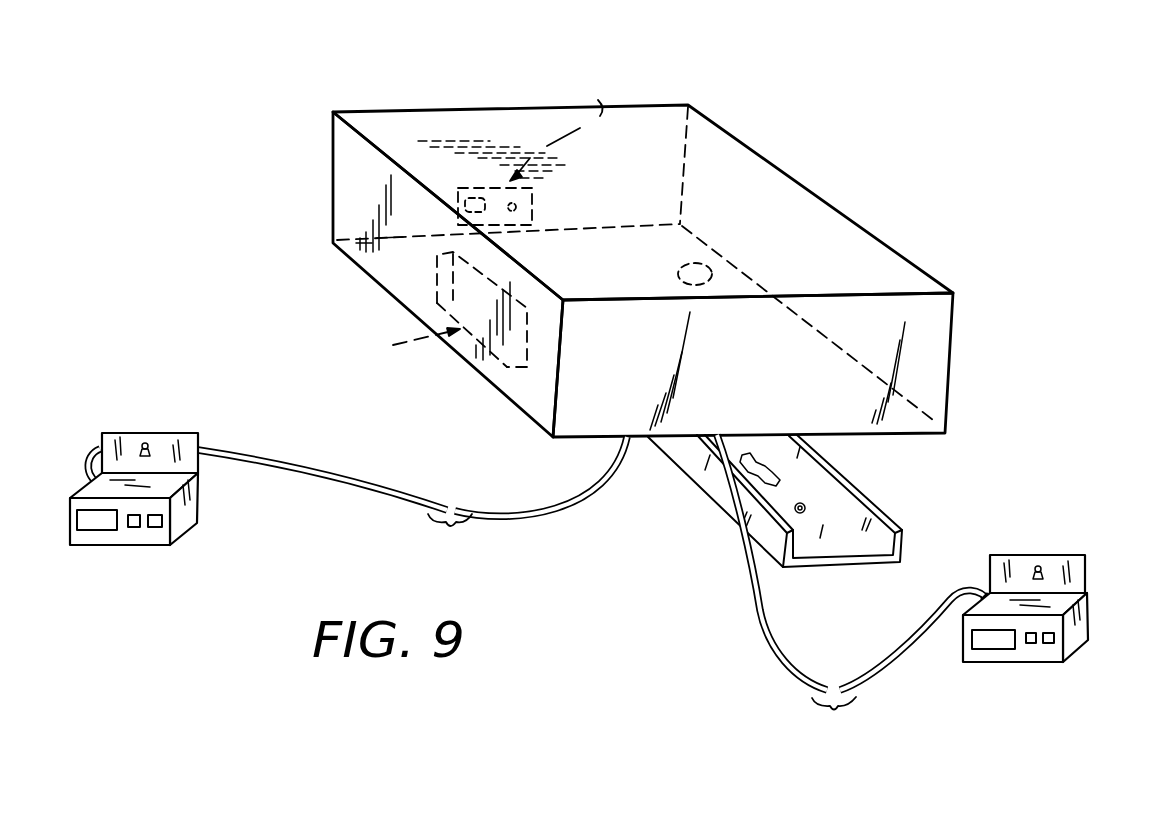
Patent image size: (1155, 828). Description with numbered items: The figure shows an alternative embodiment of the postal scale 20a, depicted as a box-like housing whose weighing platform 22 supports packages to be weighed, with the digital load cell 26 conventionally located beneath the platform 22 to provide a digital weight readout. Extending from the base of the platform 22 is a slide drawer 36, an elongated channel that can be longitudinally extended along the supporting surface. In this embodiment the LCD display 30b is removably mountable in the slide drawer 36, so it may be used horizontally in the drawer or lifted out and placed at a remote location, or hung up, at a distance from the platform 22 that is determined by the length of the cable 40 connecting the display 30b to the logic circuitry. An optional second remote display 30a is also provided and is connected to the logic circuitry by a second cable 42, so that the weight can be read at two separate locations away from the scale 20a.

The scale 20a is at (812, 110).
The weighing platform 22 is at (873, 247).
The digital load cell 26 is at (766, 232).
The LCD display 30a is at (204, 541).
The LCD display 30b is at (1014, 668).
The slide drawer 36 is at (853, 480).
The cable 40 is at (758, 612).
The second cable 42 is at (527, 520).